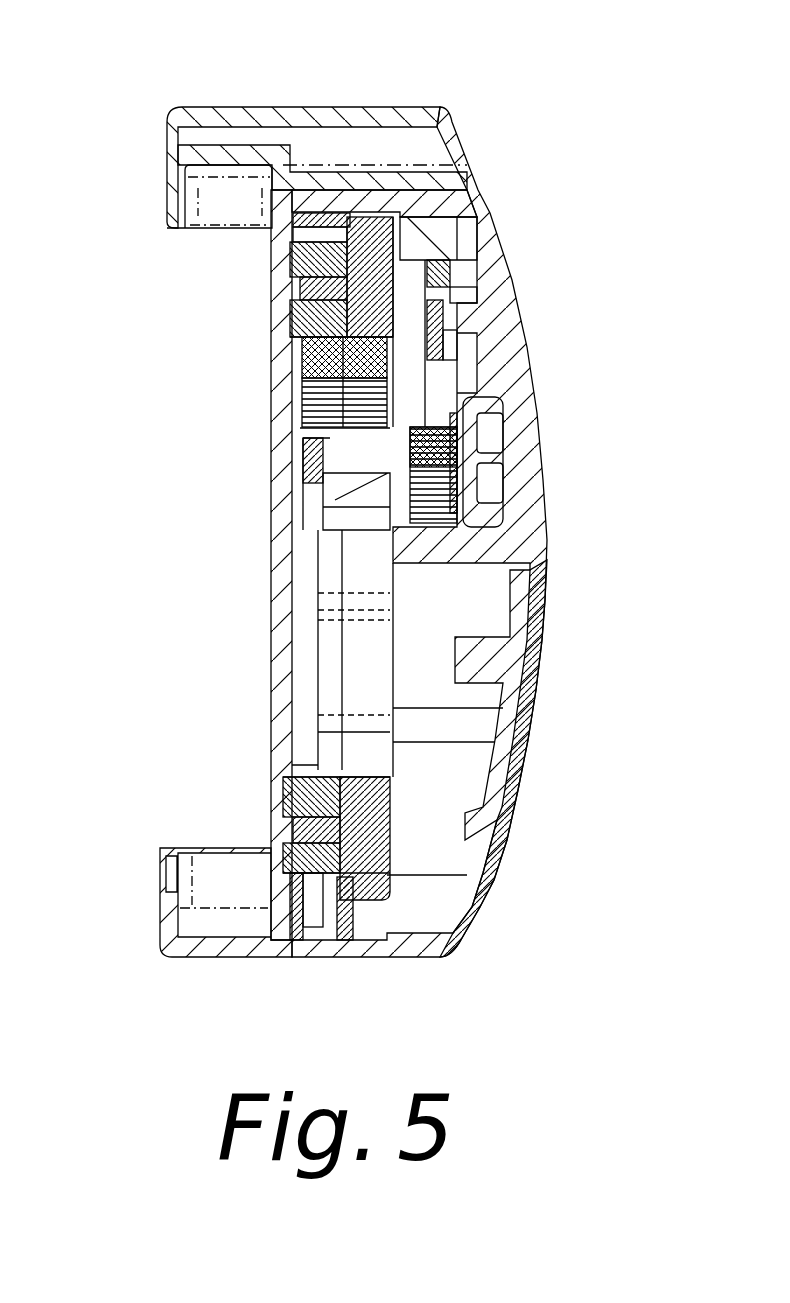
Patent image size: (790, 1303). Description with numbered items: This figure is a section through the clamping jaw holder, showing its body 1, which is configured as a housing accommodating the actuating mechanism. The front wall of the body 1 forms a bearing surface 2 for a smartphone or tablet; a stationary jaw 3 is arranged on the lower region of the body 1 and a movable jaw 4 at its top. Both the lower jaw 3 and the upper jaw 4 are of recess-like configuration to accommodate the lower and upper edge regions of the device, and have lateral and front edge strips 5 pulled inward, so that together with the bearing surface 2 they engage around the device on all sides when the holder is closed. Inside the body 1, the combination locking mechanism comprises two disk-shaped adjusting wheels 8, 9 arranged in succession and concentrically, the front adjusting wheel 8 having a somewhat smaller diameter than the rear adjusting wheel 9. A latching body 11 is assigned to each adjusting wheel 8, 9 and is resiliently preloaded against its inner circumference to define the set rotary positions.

The body 1 is at (528, 519).
The bearing surface 2 is at (274, 632).
The stationary jaw 3 is at (180, 940).
The movable jaw 4 is at (221, 162).
The edge strips 5 is at (178, 205).
The front adjusting wheel 8 is at (300, 323).
The rear adjusting wheel 9 is at (383, 293).
The latching body 11 is at (300, 352).